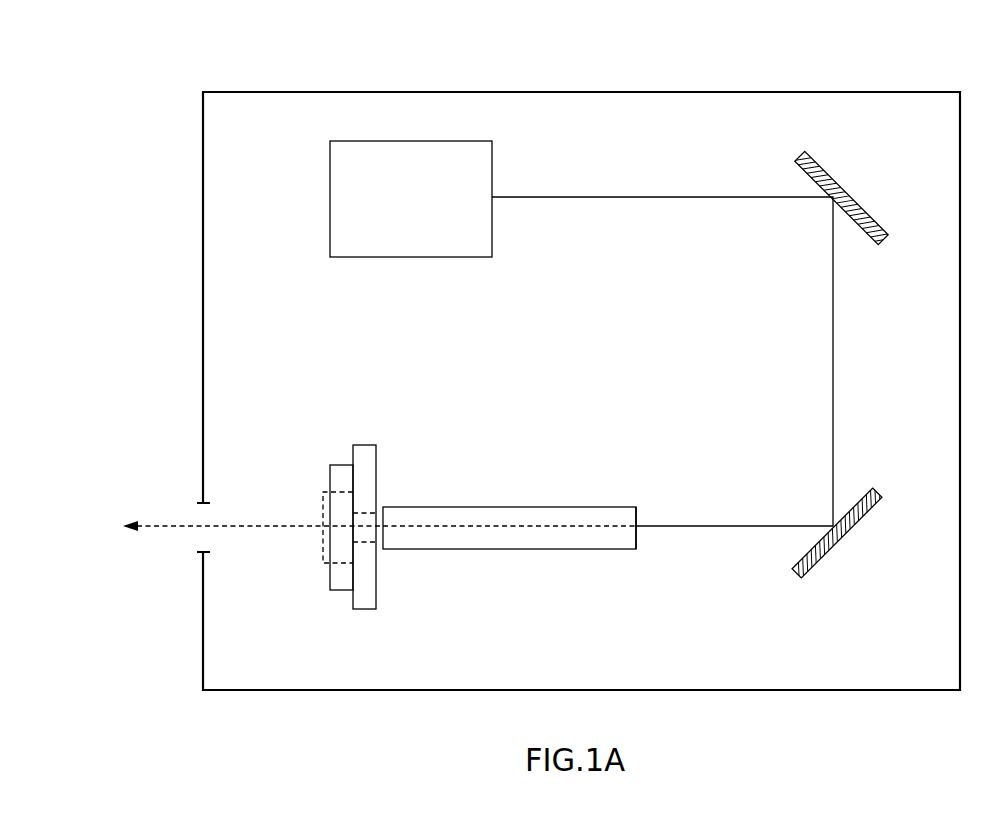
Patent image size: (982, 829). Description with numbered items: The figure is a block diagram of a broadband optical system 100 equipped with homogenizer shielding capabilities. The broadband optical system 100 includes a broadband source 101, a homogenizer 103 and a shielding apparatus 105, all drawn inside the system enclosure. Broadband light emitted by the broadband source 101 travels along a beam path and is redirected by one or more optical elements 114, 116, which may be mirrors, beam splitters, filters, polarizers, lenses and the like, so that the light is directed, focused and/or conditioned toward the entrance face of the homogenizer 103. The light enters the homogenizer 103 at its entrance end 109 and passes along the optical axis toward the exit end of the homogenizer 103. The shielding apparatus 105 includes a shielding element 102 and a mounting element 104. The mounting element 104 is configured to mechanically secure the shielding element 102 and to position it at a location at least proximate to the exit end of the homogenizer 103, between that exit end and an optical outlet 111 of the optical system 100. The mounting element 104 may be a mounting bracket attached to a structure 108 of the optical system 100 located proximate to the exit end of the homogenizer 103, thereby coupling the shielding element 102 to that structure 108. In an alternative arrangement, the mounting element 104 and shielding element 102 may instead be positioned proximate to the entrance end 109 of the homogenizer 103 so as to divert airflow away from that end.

The broadband optical system 100 is at (182, 58).
The broadband source 101 is at (493, 170).
The shielding element 102 is at (330, 510).
The homogenizer 103 is at (532, 513).
The mounting element 104 is at (343, 470).
The shielding apparatus 105 is at (308, 524).
The structure 108 is at (365, 452).
The entrance end 109 is at (637, 520).
The optical outlet 111 is at (214, 542).
The optical element 114 is at (842, 187).
The optical element 116 is at (843, 535).